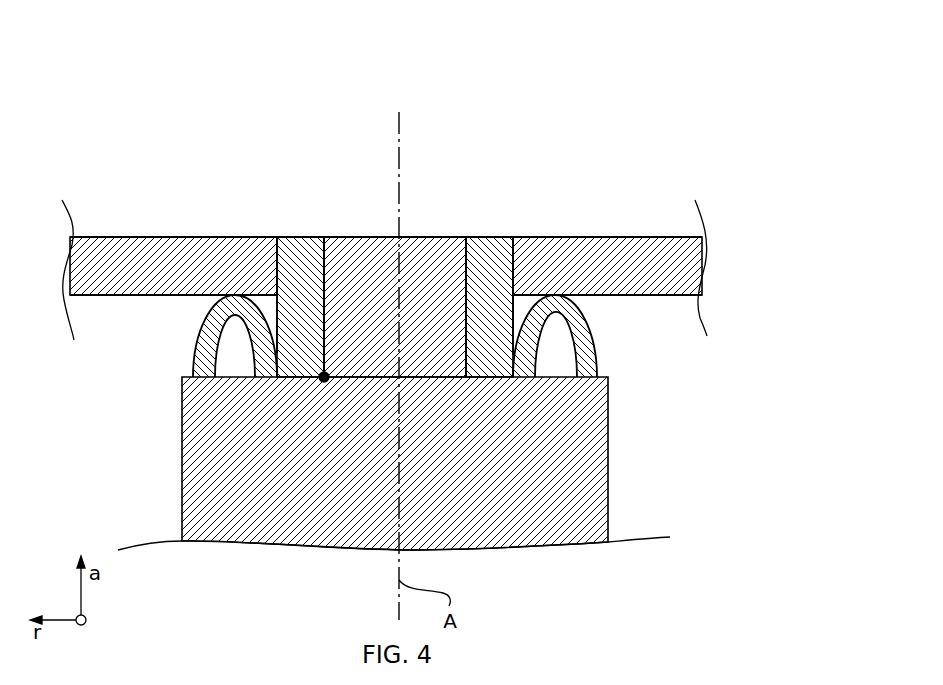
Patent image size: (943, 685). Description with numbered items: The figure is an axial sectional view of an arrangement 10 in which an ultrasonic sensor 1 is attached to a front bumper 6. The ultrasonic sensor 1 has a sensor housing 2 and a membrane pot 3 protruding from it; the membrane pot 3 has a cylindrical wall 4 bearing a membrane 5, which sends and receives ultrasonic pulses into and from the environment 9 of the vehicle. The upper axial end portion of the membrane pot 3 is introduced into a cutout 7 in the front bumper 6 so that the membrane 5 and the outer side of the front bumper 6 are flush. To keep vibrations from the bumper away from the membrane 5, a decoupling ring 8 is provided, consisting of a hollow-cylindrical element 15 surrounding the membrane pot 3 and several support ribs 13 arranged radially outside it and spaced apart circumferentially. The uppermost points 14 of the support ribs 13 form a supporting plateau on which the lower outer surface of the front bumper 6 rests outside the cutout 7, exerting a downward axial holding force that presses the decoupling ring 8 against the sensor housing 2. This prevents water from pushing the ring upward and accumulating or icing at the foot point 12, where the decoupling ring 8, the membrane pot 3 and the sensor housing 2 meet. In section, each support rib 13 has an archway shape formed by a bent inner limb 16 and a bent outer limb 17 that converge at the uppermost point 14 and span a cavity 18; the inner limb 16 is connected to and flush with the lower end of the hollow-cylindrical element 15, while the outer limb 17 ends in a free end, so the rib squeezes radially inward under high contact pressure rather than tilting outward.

The ultrasonic sensor 1 is at (477, 98).
The sensor housing 2 is at (379, 377).
The membrane pot 3 is at (432, 158).
The cylindrical wall 4 is at (466, 256).
The membrane 5 is at (432, 237).
The front bumper 6 is at (557, 237).
The cutout 7 is at (533, 237).
The decoupling ring 8 is at (262, 158).
The environment 9 is at (105, 83).
The arrangement 10 is at (758, 117).
The foot point 12 is at (324, 378).
The support rib 13 is at (263, 308).
The uppermost point 14 is at (235, 295).
The hollow-cylindrical element 15 is at (345, 237).
The inner limb 16 is at (250, 336).
The outer limb 17 is at (207, 313).
The cavity 18 is at (246, 372).